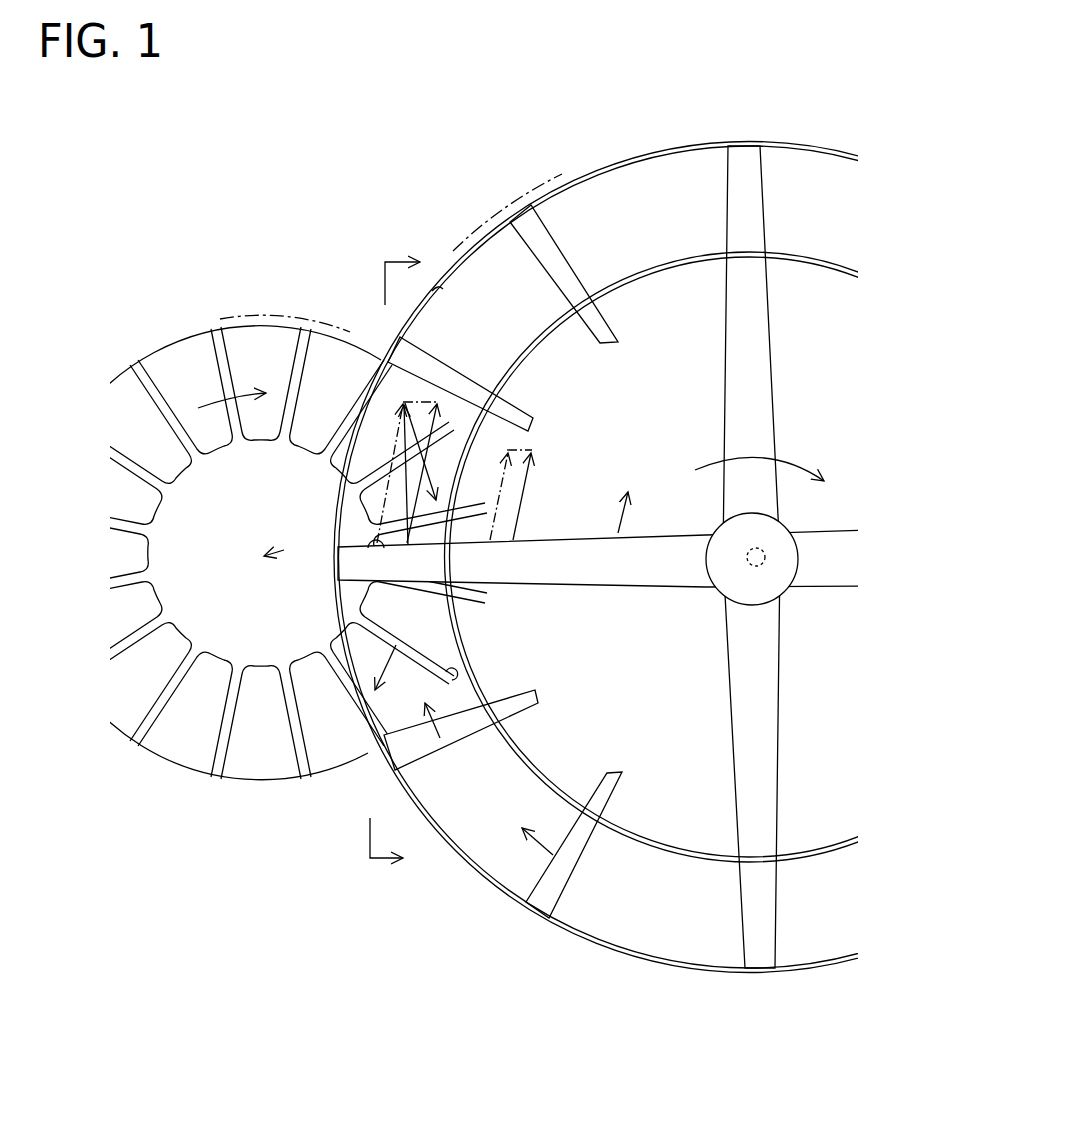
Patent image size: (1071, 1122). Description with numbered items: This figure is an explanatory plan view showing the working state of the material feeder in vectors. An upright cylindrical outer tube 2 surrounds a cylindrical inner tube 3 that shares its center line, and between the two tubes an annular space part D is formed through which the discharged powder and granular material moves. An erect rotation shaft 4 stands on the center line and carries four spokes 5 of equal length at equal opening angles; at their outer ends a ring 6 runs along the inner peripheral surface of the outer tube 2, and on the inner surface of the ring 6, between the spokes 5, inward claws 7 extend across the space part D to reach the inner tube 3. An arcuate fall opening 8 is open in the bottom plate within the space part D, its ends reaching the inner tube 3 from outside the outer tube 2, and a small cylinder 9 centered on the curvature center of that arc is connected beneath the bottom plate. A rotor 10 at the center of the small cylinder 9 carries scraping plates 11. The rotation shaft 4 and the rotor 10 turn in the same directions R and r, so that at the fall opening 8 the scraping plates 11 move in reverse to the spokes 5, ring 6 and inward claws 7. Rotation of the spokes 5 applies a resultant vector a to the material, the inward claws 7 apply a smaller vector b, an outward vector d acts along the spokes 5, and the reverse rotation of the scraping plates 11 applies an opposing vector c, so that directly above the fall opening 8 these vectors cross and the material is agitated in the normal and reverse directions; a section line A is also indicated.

The outer tube 2 is at (490, 224).
The inner tube 3 is at (557, 319).
The rotation shaft 4 is at (736, 582).
The spokes 5 is at (766, 331).
The ring 6 is at (432, 291).
The inward claws 7 is at (563, 269).
The fall opening 8 is at (440, 688).
The small cylinder 9 is at (304, 320).
The rotor 10 is at (277, 603).
The scraping plates 11 is at (226, 773).
The section line A is at (397, 566).
The space part D is at (512, 311).
The rotating direction of the rotation shaft R is at (771, 451).
The rotating direction of the rotor r is at (232, 376).
The resultant vector a is at (410, 437).
The vector due to the inward claws b is at (440, 736).
The vector due to the scraping plates c is at (356, 546).
The outward vector d is at (380, 533).